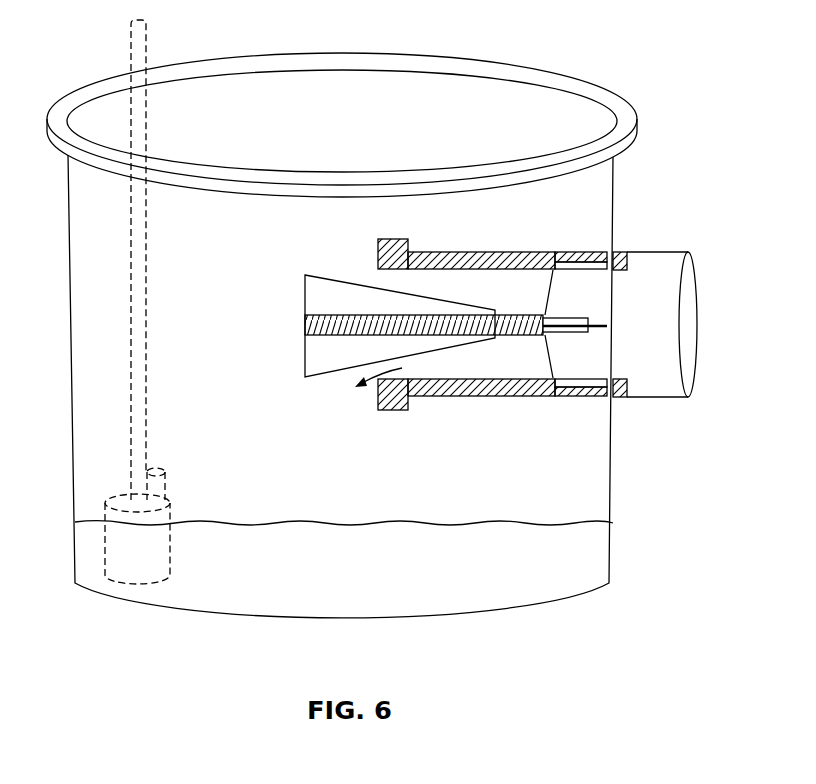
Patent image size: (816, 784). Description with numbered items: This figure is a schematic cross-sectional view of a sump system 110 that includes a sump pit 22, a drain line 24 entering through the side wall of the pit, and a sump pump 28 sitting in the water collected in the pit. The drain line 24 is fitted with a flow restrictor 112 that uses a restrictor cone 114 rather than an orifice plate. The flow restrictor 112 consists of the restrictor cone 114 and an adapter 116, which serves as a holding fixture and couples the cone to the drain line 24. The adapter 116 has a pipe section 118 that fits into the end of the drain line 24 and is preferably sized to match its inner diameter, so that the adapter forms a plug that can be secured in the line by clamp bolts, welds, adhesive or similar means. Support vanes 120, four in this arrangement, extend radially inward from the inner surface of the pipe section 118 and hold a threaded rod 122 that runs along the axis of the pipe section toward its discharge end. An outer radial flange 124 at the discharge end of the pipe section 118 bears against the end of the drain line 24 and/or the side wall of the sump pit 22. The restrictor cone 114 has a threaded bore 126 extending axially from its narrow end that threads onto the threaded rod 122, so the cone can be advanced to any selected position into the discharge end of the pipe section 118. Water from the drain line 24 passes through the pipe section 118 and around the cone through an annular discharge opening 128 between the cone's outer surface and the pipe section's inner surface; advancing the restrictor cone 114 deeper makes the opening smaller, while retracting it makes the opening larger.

The sump system 110 is at (315, 80).
The sump pit 22 is at (362, 589).
The sump pump 28 is at (105, 552).
The flow restrictor 112 is at (336, 235).
The restrictor cone 114 is at (322, 277).
The adapter 116 is at (368, 413).
The pipe section 118 is at (535, 253).
The support vanes 120 is at (605, 268).
The threaded rod 122 is at (517, 325).
The outer radial flange 124 is at (403, 240).
The threaded bore 126 is at (333, 336).
The annular discharge opening 128 is at (408, 372).
The drain line 24 is at (659, 398).